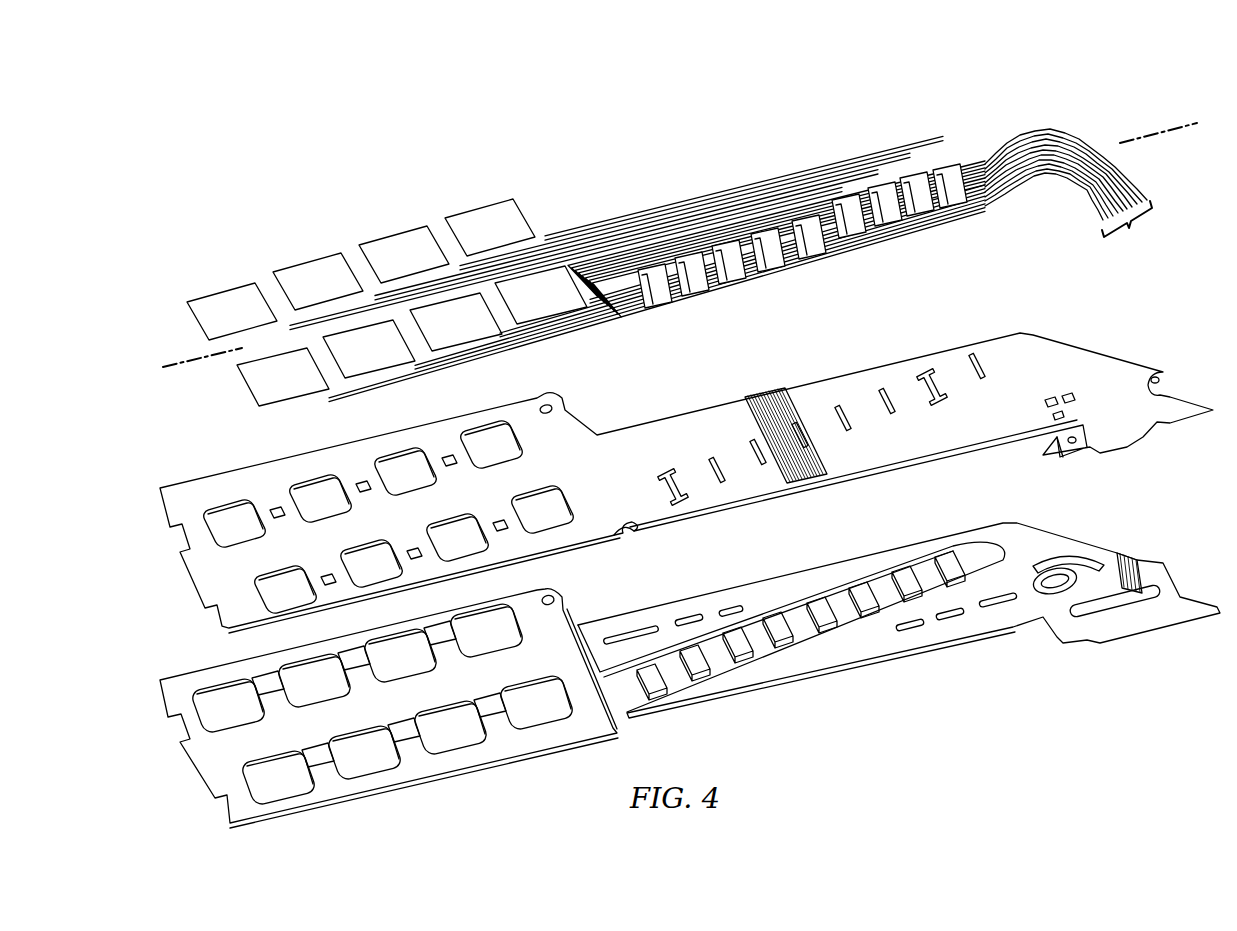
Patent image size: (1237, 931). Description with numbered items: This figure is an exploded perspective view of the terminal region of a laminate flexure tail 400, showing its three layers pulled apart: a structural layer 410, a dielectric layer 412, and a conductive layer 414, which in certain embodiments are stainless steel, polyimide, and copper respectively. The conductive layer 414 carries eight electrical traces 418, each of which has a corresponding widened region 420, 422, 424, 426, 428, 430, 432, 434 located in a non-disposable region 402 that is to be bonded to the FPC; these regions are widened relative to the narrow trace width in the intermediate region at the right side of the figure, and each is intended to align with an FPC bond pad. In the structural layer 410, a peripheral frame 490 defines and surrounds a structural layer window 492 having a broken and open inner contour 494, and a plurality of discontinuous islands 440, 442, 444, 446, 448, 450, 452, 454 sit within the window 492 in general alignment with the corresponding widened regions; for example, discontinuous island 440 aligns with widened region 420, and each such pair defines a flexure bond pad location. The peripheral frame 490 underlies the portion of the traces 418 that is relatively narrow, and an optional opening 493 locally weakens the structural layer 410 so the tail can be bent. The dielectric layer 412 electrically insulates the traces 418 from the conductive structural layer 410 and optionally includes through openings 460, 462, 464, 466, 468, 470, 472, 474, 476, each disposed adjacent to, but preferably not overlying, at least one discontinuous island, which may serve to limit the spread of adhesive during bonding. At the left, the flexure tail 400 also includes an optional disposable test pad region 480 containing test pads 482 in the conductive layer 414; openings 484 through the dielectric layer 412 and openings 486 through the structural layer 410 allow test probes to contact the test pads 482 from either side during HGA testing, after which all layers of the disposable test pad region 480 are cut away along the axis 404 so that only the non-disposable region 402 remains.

The flexure tail 400 is at (247, 146).
The non-disposable region 402 is at (955, 106).
The centerline axis 404 is at (180, 370).
The structural layer 410 is at (898, 625).
The dielectric layer 412 is at (686, 472).
The conductive layer 414 is at (1107, 134).
The electrical traces 418 is at (1131, 228).
The widened region 420 is at (650, 300).
The widened region 422 is at (690, 286).
The widened region 424 is at (727, 276).
The widened region 426 is at (770, 264).
The widened region 428 is at (812, 252).
The widened region 430 is at (840, 200).
The widened region 432 is at (907, 182).
The widened region 434 is at (940, 172).
The discontinuous island 440 is at (663, 686).
The discontinuous island 442 is at (702, 667).
The discontinuous island 444 is at (745, 649).
The discontinuous island 446 is at (785, 636).
The discontinuous island 448 is at (818, 612).
The discontinuous island 450 is at (861, 597).
The discontinuous island 452 is at (906, 580).
The discontinuous island 454 is at (950, 566).
The through opening 460 is at (621, 538).
The through opening 462 is at (661, 487).
The through opening 464 is at (707, 465).
The through opening 466 is at (750, 448).
The through opening 468 is at (808, 438).
The through opening 470 is at (851, 421).
The through opening 472 is at (895, 404).
The through opening 474 is at (942, 388).
The through opening 476 is at (985, 366).
The disposable test pad region 480 is at (495, 158).
The test pads 482 is at (222, 300).
The openings 484 is at (227, 520).
The openings 486 is at (210, 707).
The peripheral frame 490 is at (600, 628).
The structural layer window 492 is at (713, 650).
The opening 493 is at (1100, 616).
The inner contour 494 is at (787, 600).